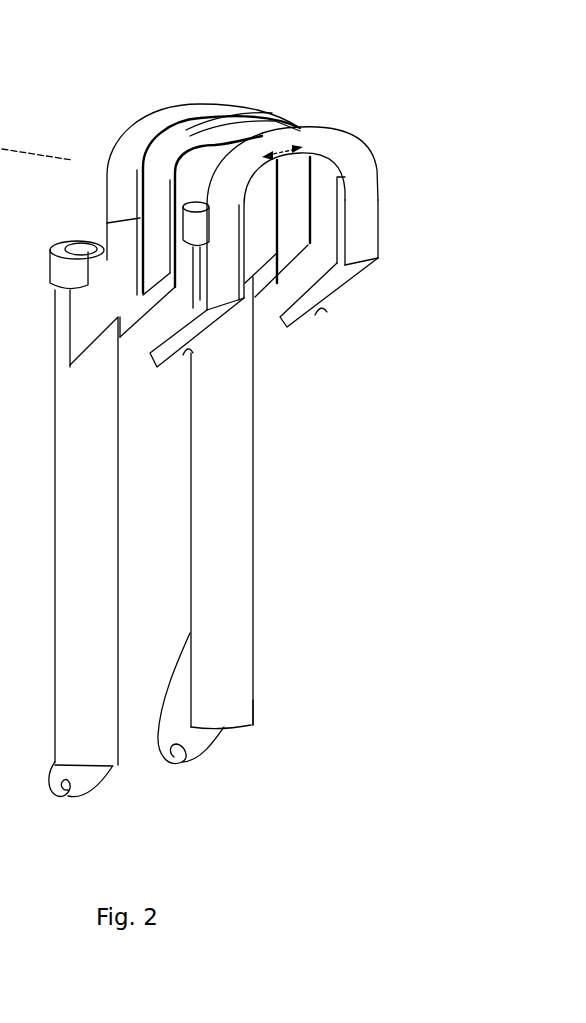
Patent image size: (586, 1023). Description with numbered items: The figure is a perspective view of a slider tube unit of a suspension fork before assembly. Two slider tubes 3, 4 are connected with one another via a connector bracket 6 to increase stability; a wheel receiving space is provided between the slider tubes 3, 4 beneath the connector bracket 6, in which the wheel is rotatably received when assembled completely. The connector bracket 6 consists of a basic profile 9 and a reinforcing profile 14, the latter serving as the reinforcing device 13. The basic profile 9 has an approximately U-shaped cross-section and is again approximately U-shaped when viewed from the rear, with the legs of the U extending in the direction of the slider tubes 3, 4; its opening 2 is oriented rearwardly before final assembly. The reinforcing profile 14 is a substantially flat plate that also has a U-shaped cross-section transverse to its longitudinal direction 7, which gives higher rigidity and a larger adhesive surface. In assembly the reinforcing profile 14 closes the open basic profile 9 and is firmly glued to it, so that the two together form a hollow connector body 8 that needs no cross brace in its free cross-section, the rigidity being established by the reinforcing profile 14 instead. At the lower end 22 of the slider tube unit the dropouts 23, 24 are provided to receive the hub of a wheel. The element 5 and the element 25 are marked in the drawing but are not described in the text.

The opening 2 is at (167, 172).
The slider tube 3 is at (85, 563).
The slider tube 4 is at (237, 532).
The gap between legs 5 is at (148, 630).
The connector bracket 6 is at (200, 118).
The longitudinal direction 7 is at (272, 146).
The hollow connector body 8 is at (263, 87).
The basic profile 9 is at (173, 125).
The reinforcing device 13 is at (370, 197).
The reinforcing profile 14 is at (357, 148).
The lower end 22 is at (268, 717).
The dropout 23 is at (65, 802).
The dropout 24 is at (197, 780).
The hook on right leg 25 is at (182, 750).